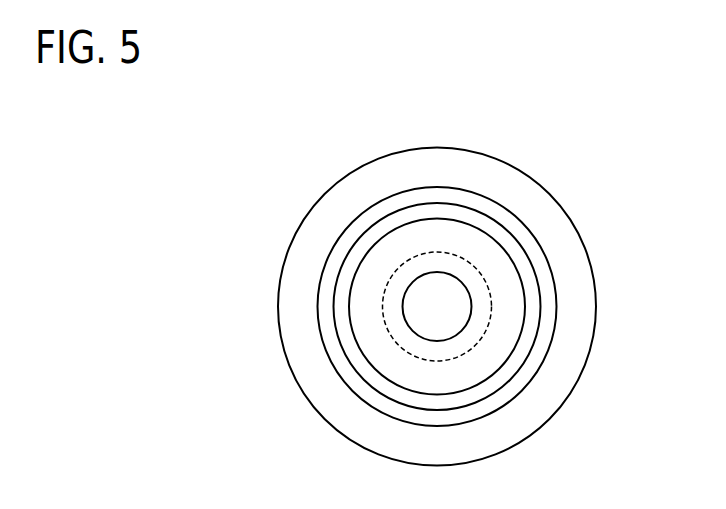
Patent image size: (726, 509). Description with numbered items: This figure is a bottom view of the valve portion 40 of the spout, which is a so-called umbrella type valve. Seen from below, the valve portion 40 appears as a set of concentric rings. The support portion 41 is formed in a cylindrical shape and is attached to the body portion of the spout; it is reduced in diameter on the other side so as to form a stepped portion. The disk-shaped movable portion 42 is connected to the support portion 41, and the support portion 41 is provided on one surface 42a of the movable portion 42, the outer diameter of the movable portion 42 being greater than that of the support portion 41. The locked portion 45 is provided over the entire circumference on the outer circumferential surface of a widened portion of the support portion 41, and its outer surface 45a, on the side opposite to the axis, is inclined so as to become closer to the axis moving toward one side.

The valve portion 40 is at (305, 160).
The support portion 41 is at (372, 235).
The movable portion 42 is at (470, 305).
The one surface of the movable portion 42a is at (567, 367).
The locked portion 45 is at (493, 306).
The outer surface of the locked portion 45a is at (548, 313).